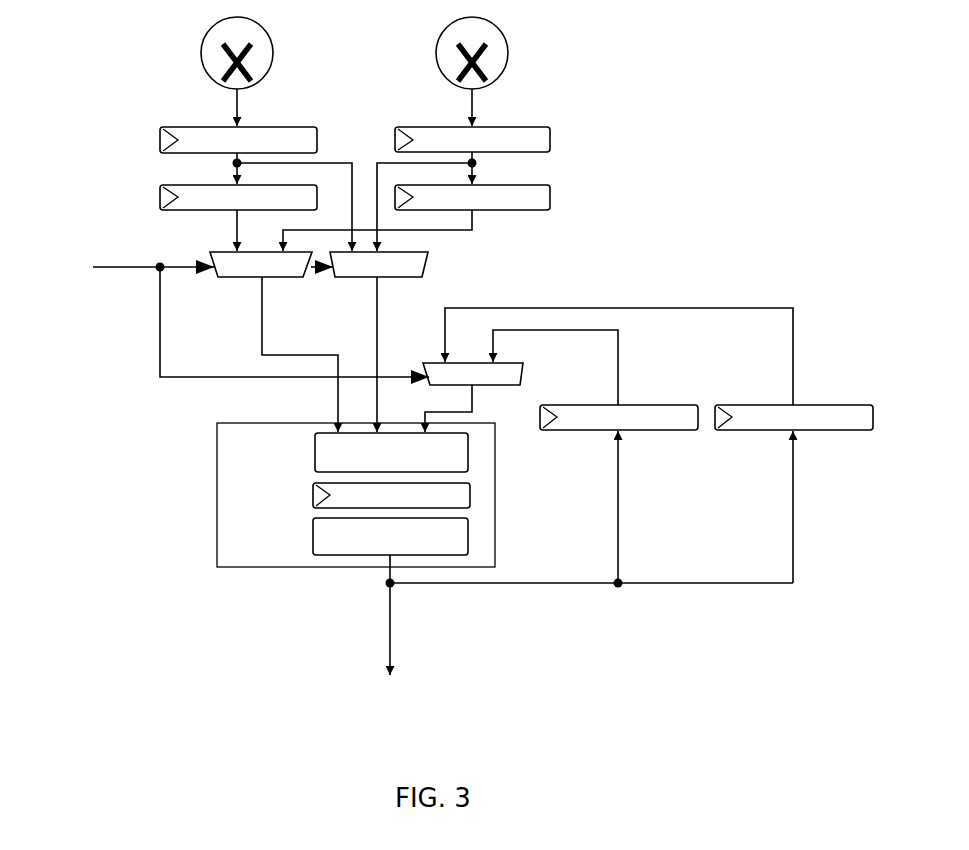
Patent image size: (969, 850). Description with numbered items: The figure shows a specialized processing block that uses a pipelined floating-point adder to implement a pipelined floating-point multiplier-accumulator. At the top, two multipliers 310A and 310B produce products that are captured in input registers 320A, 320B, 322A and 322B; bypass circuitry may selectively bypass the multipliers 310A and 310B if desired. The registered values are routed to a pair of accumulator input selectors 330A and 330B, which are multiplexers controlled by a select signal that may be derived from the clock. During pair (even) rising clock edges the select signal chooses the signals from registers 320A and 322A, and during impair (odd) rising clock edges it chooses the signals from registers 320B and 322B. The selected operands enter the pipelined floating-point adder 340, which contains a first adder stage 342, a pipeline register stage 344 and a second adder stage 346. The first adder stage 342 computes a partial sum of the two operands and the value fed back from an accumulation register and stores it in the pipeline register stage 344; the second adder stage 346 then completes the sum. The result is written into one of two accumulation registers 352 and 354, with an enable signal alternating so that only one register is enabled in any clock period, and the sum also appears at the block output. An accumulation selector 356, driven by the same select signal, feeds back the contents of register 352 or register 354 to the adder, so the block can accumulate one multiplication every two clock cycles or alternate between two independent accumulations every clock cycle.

The multiplier 310A is at (275, 62).
The multiplier 310B is at (510, 62).
The input register 320A is at (160, 143).
The input register 320B is at (550, 138).
The input register 322A is at (160, 200).
The input register 322B is at (550, 195).
The accumulator input selector 330A is at (225, 278).
The accumulator input selector 330B is at (430, 258).
The pipelined floating-point adder 340 is at (217, 500).
The first adder stage 342 is at (315, 453).
The pipeline register stage 344 is at (313, 498).
The second adder stage 346 is at (313, 543).
The accumulation register 352 is at (573, 432).
The accumulation register 354 is at (758, 432).
The accumulation selector 356 is at (523, 370).